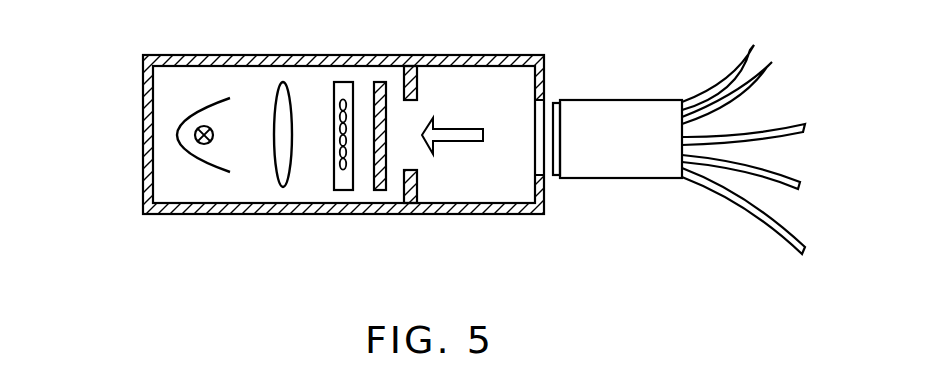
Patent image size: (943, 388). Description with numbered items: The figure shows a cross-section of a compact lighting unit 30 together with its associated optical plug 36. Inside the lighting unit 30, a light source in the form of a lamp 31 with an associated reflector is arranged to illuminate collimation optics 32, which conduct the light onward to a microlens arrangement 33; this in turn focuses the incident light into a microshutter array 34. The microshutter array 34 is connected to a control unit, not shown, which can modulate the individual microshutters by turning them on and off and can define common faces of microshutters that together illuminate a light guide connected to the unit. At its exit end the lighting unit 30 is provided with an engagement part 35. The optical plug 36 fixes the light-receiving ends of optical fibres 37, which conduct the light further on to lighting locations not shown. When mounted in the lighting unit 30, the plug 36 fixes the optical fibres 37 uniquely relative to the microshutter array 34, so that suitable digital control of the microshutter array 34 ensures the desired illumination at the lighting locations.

The lighting unit 30 is at (262, 55).
The lamp 31 is at (193, 165).
The collimation optics 32 is at (275, 167).
The microlens arrangement 33 is at (342, 190).
The microshutter array 34 is at (378, 188).
The engagement part 35 is at (417, 180).
The optical plug 36 is at (597, 180).
The optical fibres 37 is at (763, 84).